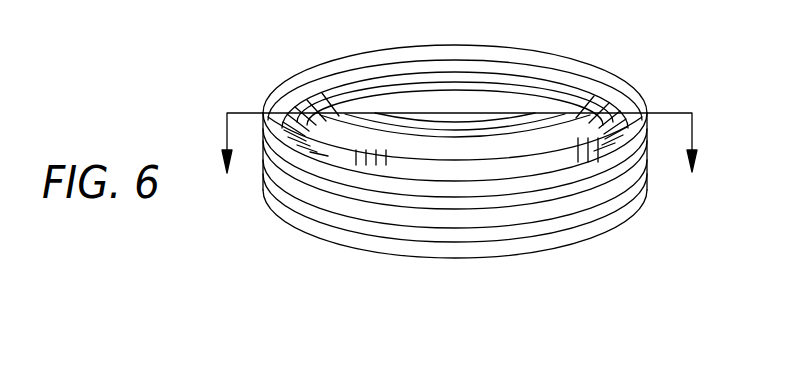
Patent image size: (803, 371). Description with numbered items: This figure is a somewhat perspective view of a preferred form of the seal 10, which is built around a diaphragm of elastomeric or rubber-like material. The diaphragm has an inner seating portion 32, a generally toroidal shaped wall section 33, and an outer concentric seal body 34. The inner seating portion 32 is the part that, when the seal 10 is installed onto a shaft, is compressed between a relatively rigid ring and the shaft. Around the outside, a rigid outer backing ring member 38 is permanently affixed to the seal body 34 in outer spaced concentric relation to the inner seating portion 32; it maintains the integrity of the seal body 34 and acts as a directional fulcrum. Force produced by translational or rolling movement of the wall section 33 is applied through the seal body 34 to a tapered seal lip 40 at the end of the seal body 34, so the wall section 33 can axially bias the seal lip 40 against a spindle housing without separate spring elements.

The seal 10 is at (649, 172).
The inner seating portion 32 is at (376, 157).
The toroidal shaped wall section 33 is at (345, 120).
The seal body 34 is at (603, 192).
The outer backing ring member 38 is at (297, 207).
The tapered seal lip 40 is at (623, 92).